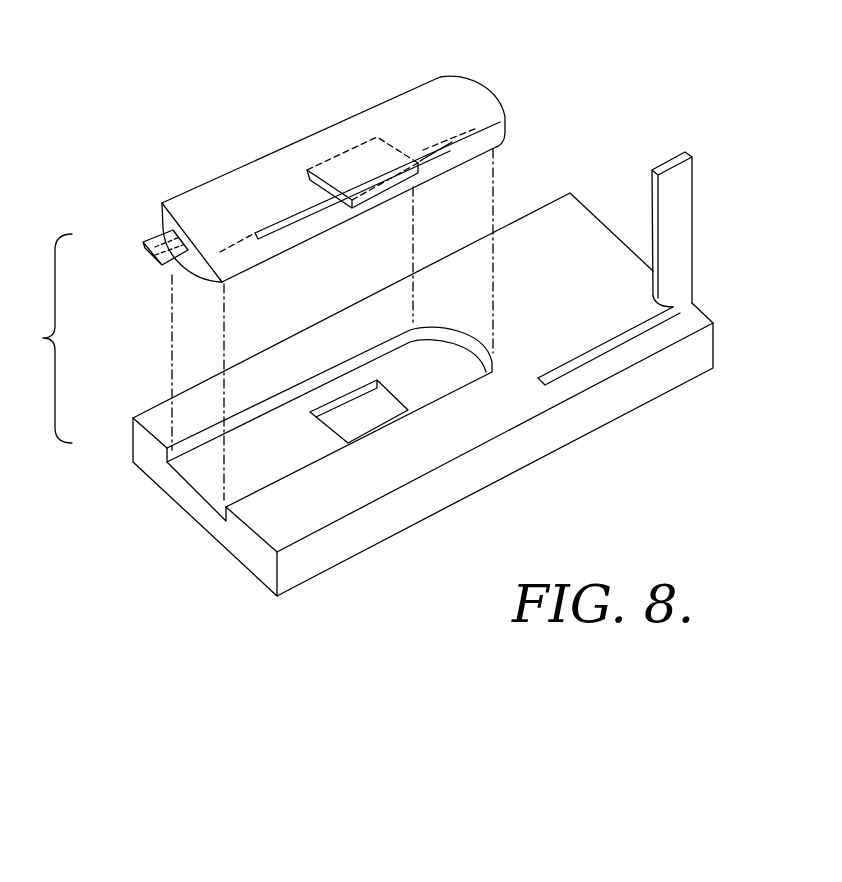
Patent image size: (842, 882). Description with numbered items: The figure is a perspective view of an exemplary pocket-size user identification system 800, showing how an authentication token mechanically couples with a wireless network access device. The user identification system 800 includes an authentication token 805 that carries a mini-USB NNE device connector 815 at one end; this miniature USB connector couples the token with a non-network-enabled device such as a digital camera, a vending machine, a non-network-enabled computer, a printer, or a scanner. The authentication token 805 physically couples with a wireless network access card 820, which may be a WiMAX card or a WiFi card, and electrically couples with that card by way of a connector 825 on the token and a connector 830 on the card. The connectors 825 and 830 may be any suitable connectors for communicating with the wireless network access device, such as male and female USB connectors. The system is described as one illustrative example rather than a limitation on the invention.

The user identification system 800 is at (159, 147).
The authentication token 805 is at (467, 88).
The mini-USB NNE device connector 815 is at (145, 252).
The wireless network access card 820 is at (574, 207).
The connector 825 is at (307, 170).
The connector 830 is at (330, 407).